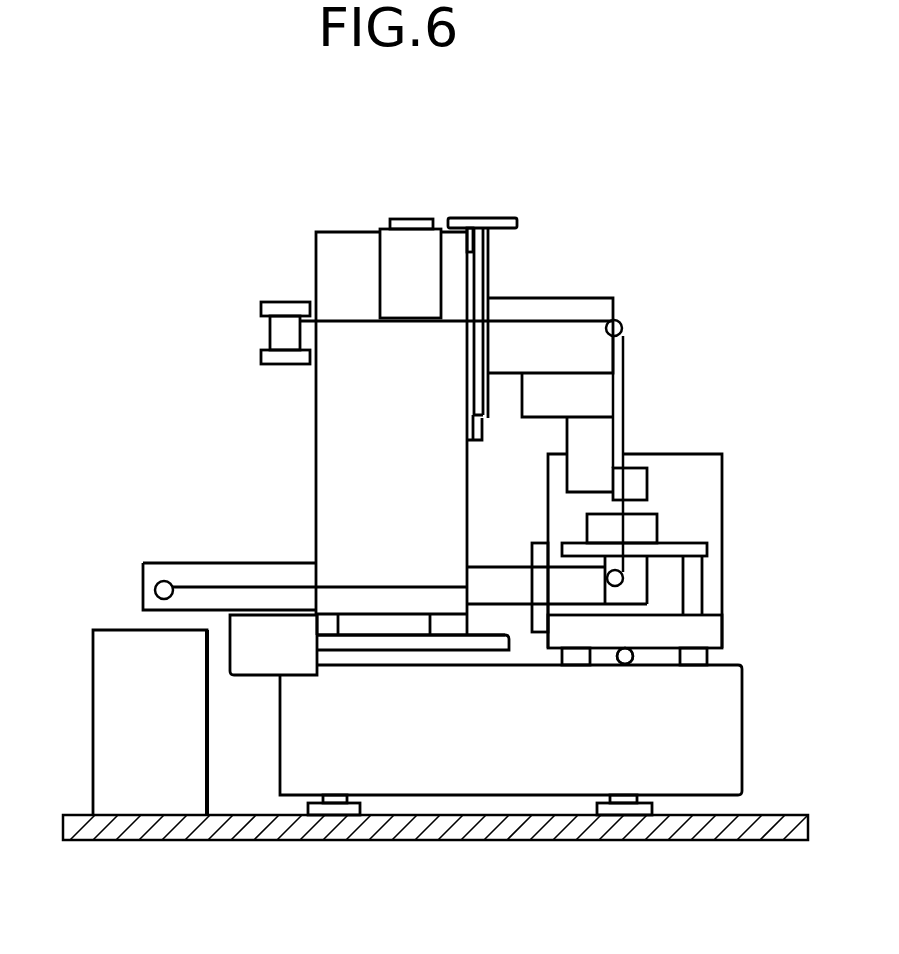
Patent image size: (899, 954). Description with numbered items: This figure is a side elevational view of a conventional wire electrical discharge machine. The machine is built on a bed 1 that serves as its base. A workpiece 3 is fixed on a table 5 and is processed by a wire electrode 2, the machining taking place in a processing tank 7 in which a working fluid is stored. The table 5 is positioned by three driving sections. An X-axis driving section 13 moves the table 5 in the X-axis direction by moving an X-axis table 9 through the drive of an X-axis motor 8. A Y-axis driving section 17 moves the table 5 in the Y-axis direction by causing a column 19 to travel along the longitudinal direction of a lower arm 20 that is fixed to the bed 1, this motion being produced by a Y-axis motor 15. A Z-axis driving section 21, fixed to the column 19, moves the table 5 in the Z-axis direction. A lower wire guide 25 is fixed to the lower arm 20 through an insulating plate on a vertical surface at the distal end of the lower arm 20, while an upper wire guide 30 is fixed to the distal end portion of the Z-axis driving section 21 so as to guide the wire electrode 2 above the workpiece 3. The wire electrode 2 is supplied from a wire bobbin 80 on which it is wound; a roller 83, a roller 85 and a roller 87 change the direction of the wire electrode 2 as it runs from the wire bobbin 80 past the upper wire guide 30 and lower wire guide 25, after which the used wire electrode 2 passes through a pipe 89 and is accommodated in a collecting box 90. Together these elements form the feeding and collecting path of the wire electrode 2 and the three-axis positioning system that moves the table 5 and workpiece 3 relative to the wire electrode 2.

The bed 1 is at (732, 722).
The wire electrode 2 is at (622, 404).
The workpiece 3 is at (657, 525).
The table 5 is at (707, 550).
The processing tank 7 is at (722, 488).
The X-axis motor 8 is at (625, 665).
The X-axis driving section 13 is at (625, 656).
The X-axis table 9 is at (723, 630).
The Y-axis motor 15 is at (250, 675).
The Y-axis driving section 17 is at (413, 642).
The column 19 is at (325, 424).
The lower arm 20 is at (493, 565).
The Z-axis driving section 21 is at (578, 297).
The lower wire guide 25 is at (632, 580).
The upper wire guide 30 is at (648, 477).
The wire bobbin 80 is at (275, 300).
The roller 83 is at (623, 330).
The roller 85 is at (611, 588).
The roller 87 is at (153, 585).
The pipe 89 is at (211, 563).
The collecting box 90 is at (93, 708).